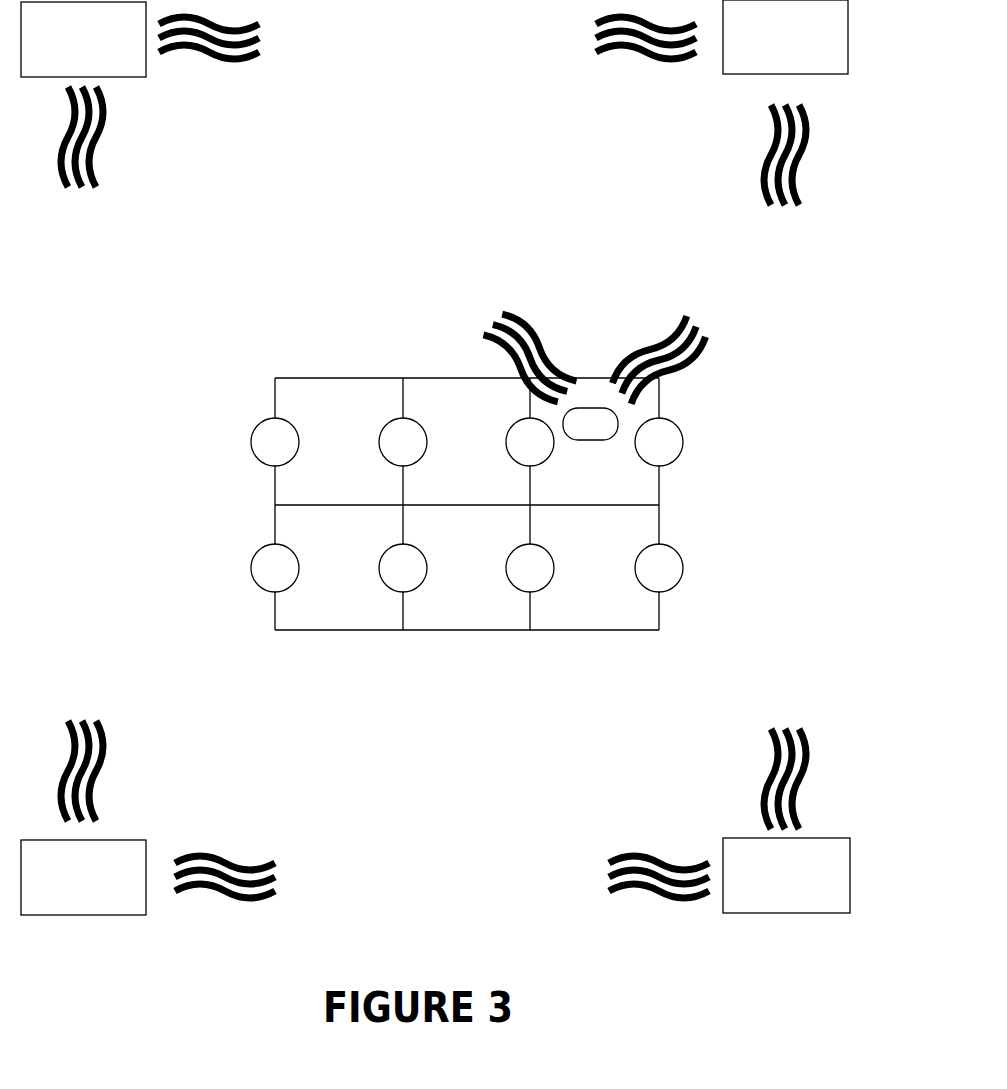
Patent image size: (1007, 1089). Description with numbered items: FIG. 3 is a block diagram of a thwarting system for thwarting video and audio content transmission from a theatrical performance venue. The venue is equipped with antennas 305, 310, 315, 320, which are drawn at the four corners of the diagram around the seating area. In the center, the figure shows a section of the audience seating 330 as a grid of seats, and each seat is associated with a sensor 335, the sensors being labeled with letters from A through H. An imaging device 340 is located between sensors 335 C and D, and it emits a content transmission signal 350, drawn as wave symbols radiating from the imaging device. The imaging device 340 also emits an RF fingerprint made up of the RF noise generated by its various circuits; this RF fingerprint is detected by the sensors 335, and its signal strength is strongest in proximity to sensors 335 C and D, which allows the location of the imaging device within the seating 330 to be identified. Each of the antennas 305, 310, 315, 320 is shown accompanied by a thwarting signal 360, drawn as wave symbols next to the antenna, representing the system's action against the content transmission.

The antenna 305 is at (83, 39).
The antenna 310 is at (83, 877).
The antenna 315 is at (785, 37).
The antenna 320 is at (786, 875).
The audience seating 330 is at (463, 455).
The sensor 335 is at (368, 494).
The imaging device 340 is at (669, 468).
The content transmission signal 350 is at (594, 298).
The thwarting signal 360 is at (433, 457).